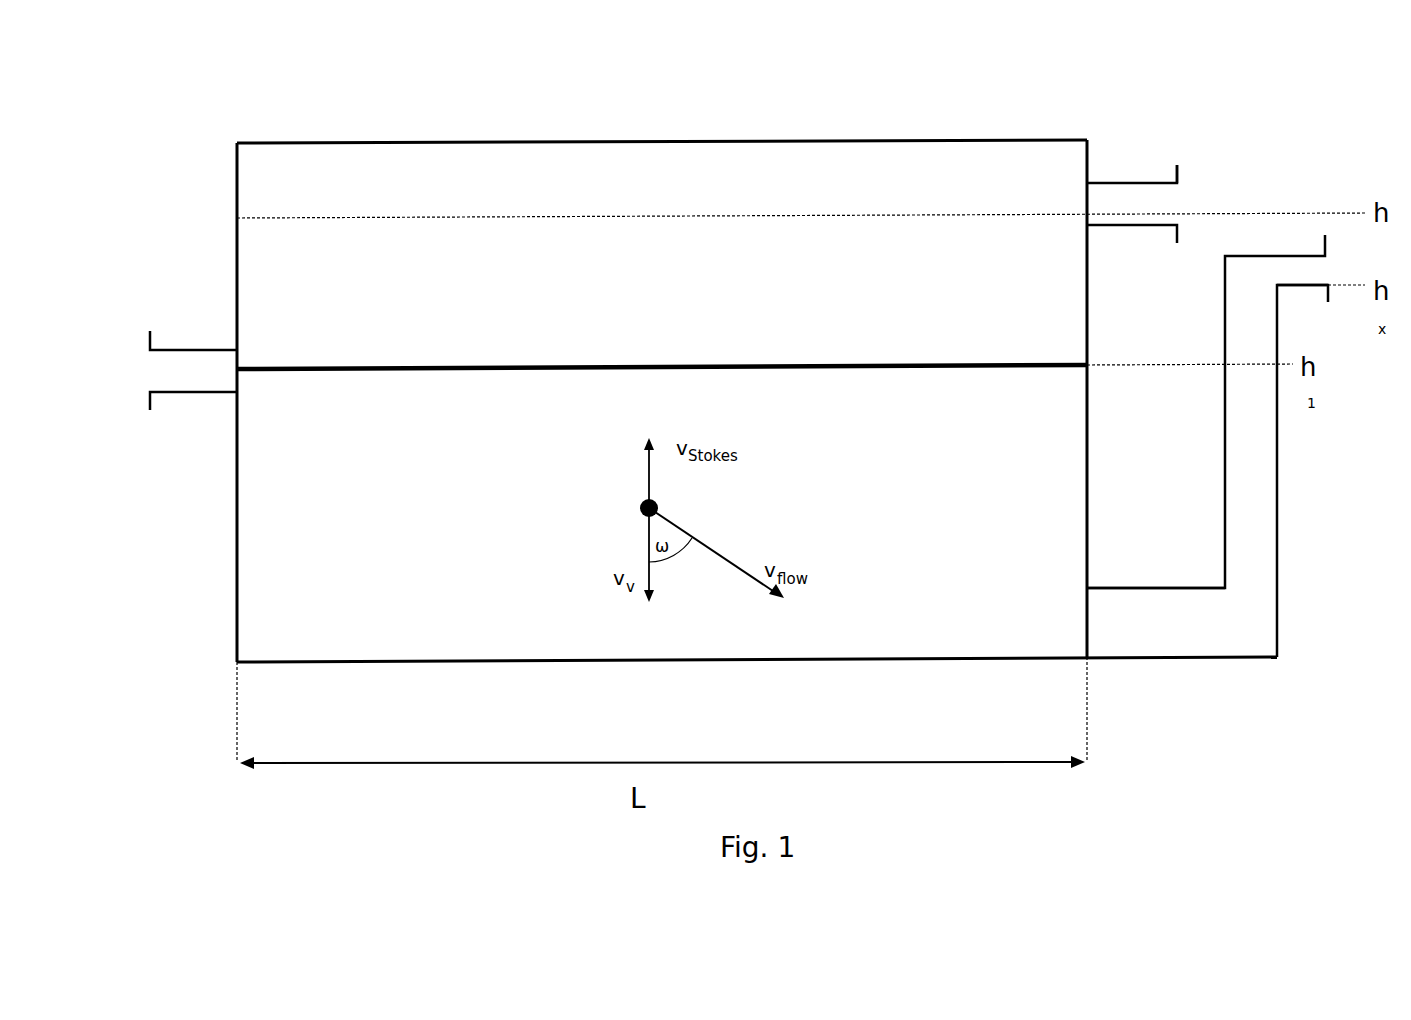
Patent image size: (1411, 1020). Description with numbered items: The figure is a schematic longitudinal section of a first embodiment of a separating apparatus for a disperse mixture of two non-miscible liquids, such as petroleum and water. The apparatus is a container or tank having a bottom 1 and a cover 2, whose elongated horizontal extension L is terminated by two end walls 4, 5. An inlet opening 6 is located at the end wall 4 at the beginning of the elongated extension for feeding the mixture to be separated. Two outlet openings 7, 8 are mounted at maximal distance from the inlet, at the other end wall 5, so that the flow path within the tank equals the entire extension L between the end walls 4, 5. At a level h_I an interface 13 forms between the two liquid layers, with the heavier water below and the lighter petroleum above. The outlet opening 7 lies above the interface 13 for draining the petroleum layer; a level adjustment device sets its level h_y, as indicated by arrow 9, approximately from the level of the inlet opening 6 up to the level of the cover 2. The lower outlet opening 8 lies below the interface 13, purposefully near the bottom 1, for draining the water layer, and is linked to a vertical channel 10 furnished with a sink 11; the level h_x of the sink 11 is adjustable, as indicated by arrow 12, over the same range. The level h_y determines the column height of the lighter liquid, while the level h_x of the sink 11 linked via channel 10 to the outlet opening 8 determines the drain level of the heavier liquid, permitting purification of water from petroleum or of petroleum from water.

The bottom 1 is at (1030, 658).
The cover 2 is at (969, 139).
The end wall 4 is at (237, 248).
The end wall 5 is at (1087, 152).
The inlet opening 6 is at (197, 392).
The outlet opening 7 is at (1148, 181).
The outlet opening 8 is at (1087, 615).
The arrow 9 is at (1205, 246).
The vertical channel 10 is at (1277, 430).
The sink 11 is at (1297, 287).
The arrow 12 is at (1347, 306).
The interface 13 is at (365, 370).